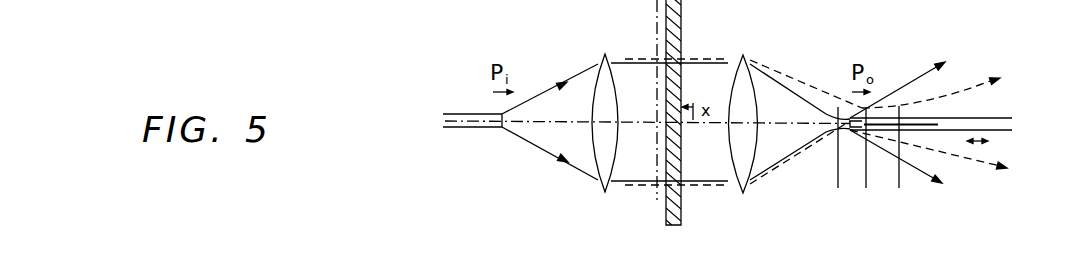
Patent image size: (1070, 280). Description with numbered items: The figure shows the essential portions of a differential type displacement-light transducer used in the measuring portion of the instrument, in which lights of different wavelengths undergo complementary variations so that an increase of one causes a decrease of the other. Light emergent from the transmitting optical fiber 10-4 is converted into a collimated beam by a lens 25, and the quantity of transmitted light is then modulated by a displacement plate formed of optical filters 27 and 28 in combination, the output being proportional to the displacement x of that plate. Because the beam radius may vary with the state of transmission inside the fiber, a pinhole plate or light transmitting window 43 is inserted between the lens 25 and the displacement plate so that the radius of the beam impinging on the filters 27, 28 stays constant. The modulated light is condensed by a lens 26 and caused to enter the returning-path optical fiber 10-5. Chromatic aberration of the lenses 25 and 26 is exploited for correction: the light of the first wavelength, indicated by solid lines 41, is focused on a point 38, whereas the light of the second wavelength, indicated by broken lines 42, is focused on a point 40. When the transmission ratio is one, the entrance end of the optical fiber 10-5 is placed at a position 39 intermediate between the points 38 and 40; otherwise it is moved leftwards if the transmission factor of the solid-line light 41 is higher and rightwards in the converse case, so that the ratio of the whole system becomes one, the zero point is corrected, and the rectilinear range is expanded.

The transmitting optical fiber 10-4 is at (476, 129).
The returning-path optical fiber 10-5 is at (984, 117).
The lens 25 is at (593, 140).
The lens 26 is at (757, 100).
The optical filter 27 is at (683, 213).
The optical filter 28 is at (683, 28).
The focal point 38 is at (836, 162).
The intermediate position 39 is at (866, 162).
The focal point 40 is at (901, 161).
The solid lines 41 is at (917, 77).
The broken lines 42 is at (965, 93).
The light transmitting window 43 is at (655, 4).